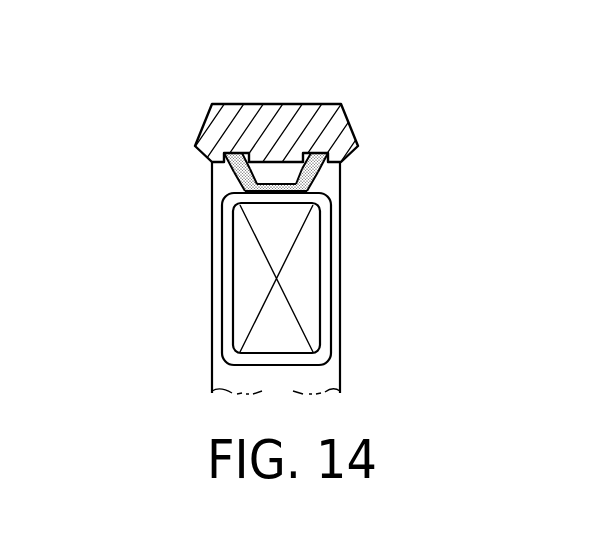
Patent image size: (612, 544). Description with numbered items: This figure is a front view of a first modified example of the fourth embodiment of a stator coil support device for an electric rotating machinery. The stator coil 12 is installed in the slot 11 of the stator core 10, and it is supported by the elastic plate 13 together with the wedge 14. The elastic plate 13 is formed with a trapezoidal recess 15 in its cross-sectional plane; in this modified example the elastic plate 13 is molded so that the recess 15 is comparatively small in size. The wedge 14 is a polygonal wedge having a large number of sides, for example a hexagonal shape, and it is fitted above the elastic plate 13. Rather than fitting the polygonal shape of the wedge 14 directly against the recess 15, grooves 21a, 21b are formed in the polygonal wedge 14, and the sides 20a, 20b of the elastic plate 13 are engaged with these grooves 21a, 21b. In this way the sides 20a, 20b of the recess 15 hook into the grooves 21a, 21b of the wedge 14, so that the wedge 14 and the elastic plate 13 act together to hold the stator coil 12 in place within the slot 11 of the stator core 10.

The stator core 10 is at (187, 243).
The slot 11 is at (203, 309).
The stator coil 12 is at (244, 318).
The elastic plate 13 is at (423, 170).
The wedge 14 is at (332, 122).
The recess 15 is at (283, 173).
The side of the recess 20a is at (242, 177).
The side of the recess 20b is at (332, 172).
The groove 21a is at (236, 166).
The groove 21b is at (308, 150).